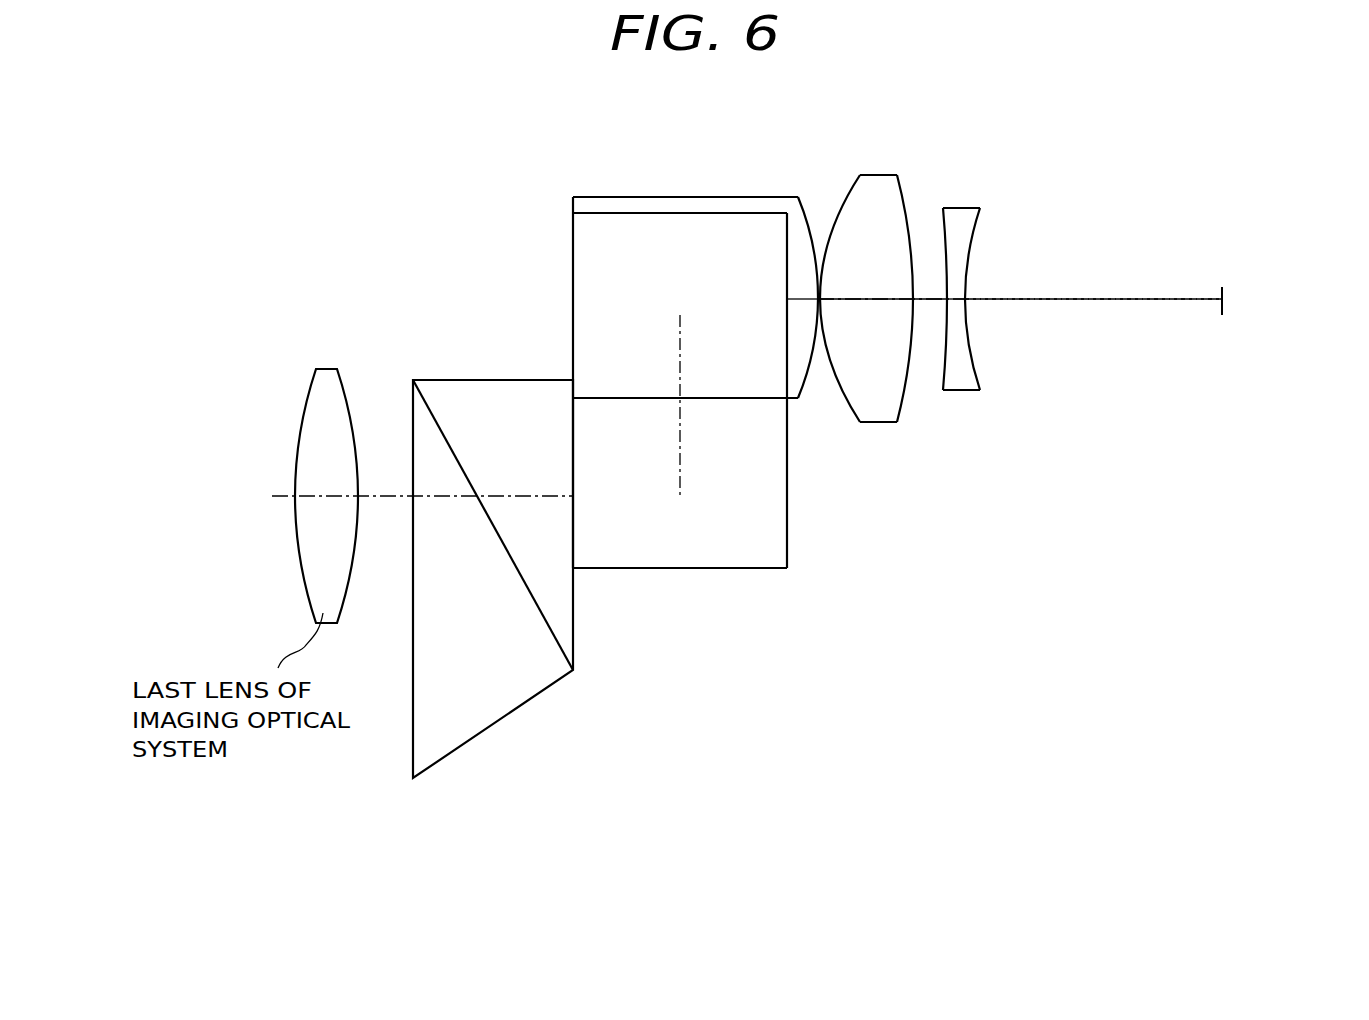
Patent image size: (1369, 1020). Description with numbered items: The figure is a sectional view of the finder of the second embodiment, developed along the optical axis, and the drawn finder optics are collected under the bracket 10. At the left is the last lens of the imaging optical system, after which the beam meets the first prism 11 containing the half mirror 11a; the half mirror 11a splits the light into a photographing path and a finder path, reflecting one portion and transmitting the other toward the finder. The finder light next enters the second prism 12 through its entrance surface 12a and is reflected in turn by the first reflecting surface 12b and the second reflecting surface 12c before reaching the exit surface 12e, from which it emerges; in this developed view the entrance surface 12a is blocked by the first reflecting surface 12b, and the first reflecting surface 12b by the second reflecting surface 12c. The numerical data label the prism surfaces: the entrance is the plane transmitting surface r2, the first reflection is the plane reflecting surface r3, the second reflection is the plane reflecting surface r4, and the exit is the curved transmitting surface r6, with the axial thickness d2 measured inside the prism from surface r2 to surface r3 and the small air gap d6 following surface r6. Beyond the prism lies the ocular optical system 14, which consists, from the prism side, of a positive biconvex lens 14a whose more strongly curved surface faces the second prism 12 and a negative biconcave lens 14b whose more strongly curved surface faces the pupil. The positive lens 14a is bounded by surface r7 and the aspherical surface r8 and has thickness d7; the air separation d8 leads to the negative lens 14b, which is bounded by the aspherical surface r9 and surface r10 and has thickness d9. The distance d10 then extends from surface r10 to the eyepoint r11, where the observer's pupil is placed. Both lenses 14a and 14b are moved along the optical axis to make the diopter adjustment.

The viewfinder optical system (prism unit) 10 is at (653, 510).
The prism 11 is at (493, 617).
The half mirror 11a is at (545, 633).
The second prism 12 is at (738, 395).
The entrance surface 12a is at (834, 390).
The first reflecting surface 12b is at (680, 603).
The second reflecting surface 12c is at (685, 183).
The exit surface 12e is at (772, 253).
The ocular optical system 14 is at (930, 292).
The positive biconvex lens 14a is at (866, 253).
The negative biconcave lens 14b is at (998, 247).
The axial thickness d2 is at (680, 352).
The axial distance d6 is at (819, 313).
The axial thickness d7 is at (865, 300).
The axial distance d8 is at (932, 300).
The axial thickness d9 is at (962, 300).
The axial distance d10 is at (1077, 300).
The transmitting surface r2 is at (845, 390).
The reflecting surface r3 is at (628, 557).
The reflecting surface r4 is at (636, 226).
The transmitting surface r6 is at (806, 210).
The lens surface r7 is at (838, 210).
The aspherical surface r8 is at (905, 195).
The aspherical surface r9 is at (942, 240).
The lens surface r10 is at (970, 260).
The eyepoint r11 is at (1222, 290).